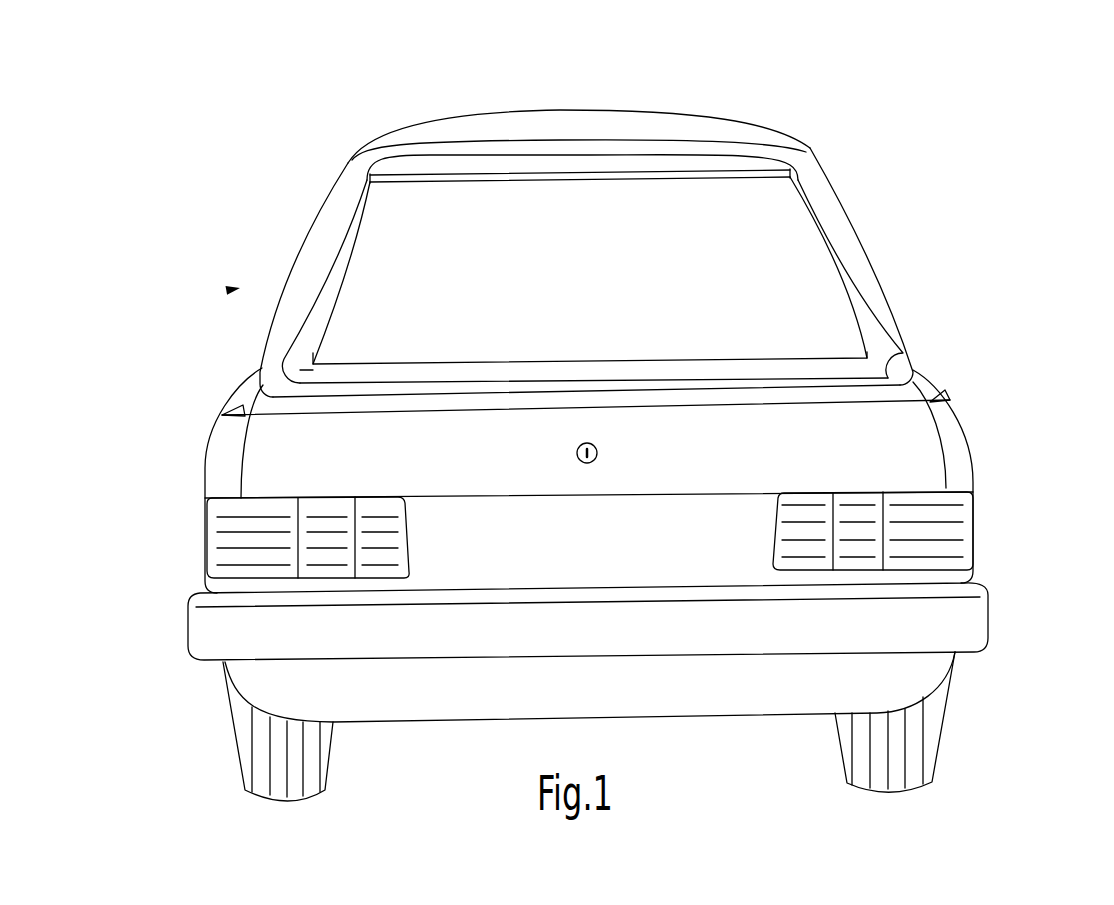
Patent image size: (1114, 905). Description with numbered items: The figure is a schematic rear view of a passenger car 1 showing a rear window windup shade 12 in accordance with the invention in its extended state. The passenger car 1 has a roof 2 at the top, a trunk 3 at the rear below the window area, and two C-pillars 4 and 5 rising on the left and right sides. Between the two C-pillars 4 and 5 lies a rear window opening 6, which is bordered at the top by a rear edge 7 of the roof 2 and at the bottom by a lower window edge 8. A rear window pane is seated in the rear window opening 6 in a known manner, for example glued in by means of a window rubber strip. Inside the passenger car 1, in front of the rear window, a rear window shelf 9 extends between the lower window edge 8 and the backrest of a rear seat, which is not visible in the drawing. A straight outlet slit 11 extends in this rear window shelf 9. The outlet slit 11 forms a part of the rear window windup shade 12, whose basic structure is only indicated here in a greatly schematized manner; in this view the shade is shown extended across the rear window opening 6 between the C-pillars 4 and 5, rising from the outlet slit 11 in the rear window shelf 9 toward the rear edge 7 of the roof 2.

The passenger car 1 is at (853, 138).
The roof 2 is at (545, 108).
The trunk 3 is at (983, 425).
The C-pillar 4 is at (313, 258).
The C-pillar 5 is at (852, 235).
The rear window opening 6 is at (845, 258).
The rear edge of the roof 7 is at (603, 152).
The lower window edge 8 is at (752, 376).
The rear window shelf 9 is at (469, 373).
The outlet slit 11 is at (877, 343).
The rear window windup shade 12 is at (240, 288).